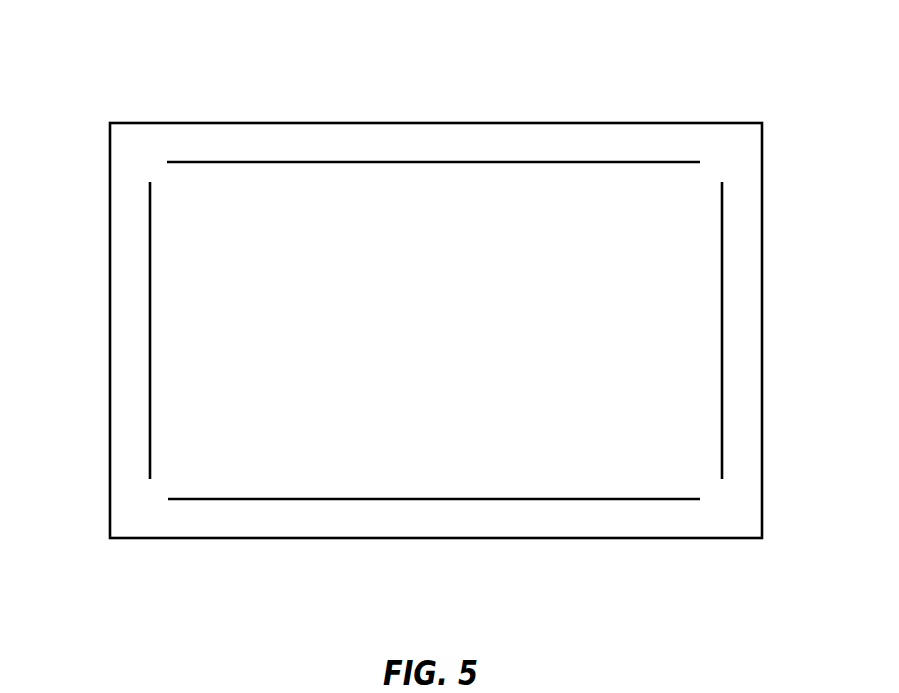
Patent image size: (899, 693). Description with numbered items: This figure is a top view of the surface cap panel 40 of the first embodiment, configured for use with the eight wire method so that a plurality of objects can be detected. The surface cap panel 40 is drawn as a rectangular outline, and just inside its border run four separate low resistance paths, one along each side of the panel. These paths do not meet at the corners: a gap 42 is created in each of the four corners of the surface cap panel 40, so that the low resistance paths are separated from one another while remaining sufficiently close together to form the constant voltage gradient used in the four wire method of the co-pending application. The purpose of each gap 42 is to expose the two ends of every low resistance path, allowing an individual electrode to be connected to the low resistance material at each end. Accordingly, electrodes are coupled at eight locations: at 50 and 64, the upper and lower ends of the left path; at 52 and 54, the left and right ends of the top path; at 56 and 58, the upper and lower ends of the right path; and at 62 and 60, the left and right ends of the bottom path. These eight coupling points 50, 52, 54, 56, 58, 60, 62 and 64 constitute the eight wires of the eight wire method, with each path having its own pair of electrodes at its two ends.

The surface cap panel 40 is at (529, 123).
The gap 42 is at (167, 177).
The electrode coupling point 50 is at (148, 180).
The electrode coupling point 52 is at (167, 160).
The electrode coupling point 54 is at (700, 160).
The electrode coupling point 56 is at (722, 182).
The electrode coupling point 58 is at (722, 478).
The electrode coupling point 60 is at (700, 500).
The electrode coupling point 62 is at (168, 500).
The electrode coupling point 64 is at (148, 480).